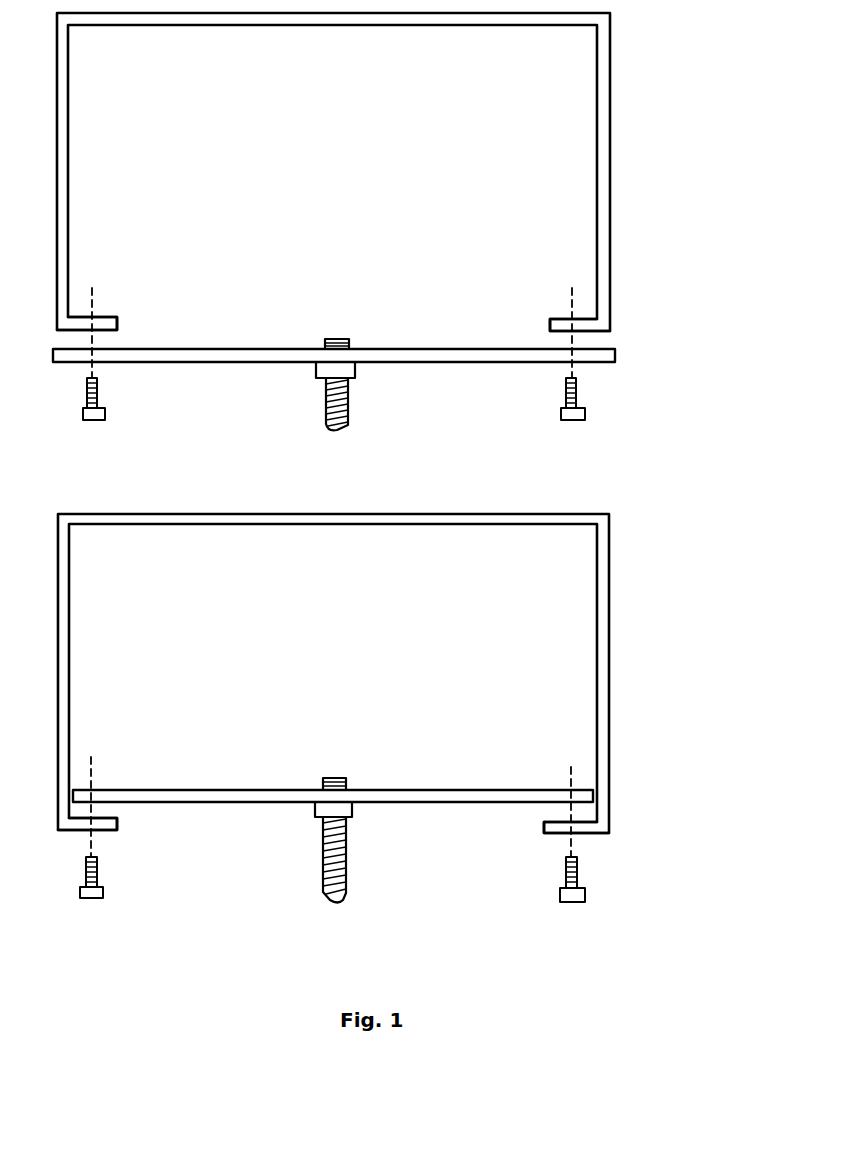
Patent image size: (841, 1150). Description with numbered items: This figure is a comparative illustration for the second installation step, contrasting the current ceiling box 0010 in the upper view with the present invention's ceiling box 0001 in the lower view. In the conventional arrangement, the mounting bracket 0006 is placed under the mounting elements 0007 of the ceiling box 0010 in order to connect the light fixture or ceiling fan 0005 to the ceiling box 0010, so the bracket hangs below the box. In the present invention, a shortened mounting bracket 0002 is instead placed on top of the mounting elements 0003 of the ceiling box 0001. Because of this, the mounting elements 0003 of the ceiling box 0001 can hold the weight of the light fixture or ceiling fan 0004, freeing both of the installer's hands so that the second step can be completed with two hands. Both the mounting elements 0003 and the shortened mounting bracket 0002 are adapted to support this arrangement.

The current ceiling box 0010 is at (627, 122).
The mounting elements 0007 is at (107, 325).
The mounting bracket 0006 is at (213, 351).
The LFOCF 0005 is at (362, 388).
The ceiling box of the present invention 0001 is at (615, 622).
The shortened mounting bracket 0002 is at (182, 790).
The mounting elements 0003 is at (108, 828).
The LFOCF 0004 is at (365, 846).